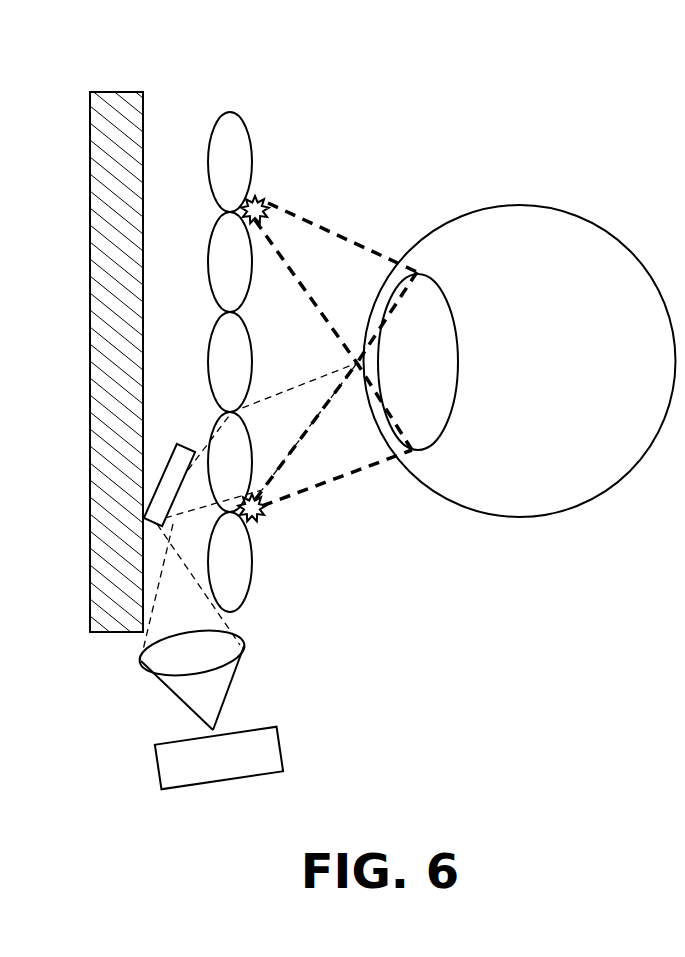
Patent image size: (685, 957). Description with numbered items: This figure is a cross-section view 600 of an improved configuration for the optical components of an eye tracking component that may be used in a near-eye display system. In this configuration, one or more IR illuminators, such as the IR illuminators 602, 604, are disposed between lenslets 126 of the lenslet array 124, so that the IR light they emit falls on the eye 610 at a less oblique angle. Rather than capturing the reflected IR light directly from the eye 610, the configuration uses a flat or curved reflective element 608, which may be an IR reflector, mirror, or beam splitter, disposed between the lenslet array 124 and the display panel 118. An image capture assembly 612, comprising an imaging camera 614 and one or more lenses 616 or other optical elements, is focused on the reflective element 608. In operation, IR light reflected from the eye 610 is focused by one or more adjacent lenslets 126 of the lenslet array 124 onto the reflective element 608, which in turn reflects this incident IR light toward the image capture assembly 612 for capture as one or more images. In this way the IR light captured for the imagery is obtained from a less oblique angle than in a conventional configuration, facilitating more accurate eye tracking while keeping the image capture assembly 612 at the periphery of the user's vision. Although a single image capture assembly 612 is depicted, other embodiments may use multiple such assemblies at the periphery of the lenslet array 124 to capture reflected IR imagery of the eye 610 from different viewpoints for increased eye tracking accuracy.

The display panel 118 is at (111, 92).
The lenslet array 124 is at (202, 325).
The lenslet 126 is at (208, 163).
The cross-section view 600 is at (456, 319).
The IR illuminator 602 is at (267, 200).
The IR illuminator 604 is at (263, 526).
The reflective element 608 is at (180, 444).
The eye 610 is at (546, 205).
The image capture assembly 612 is at (211, 707).
The imaging camera 614 is at (160, 766).
The lens 616 is at (150, 662).